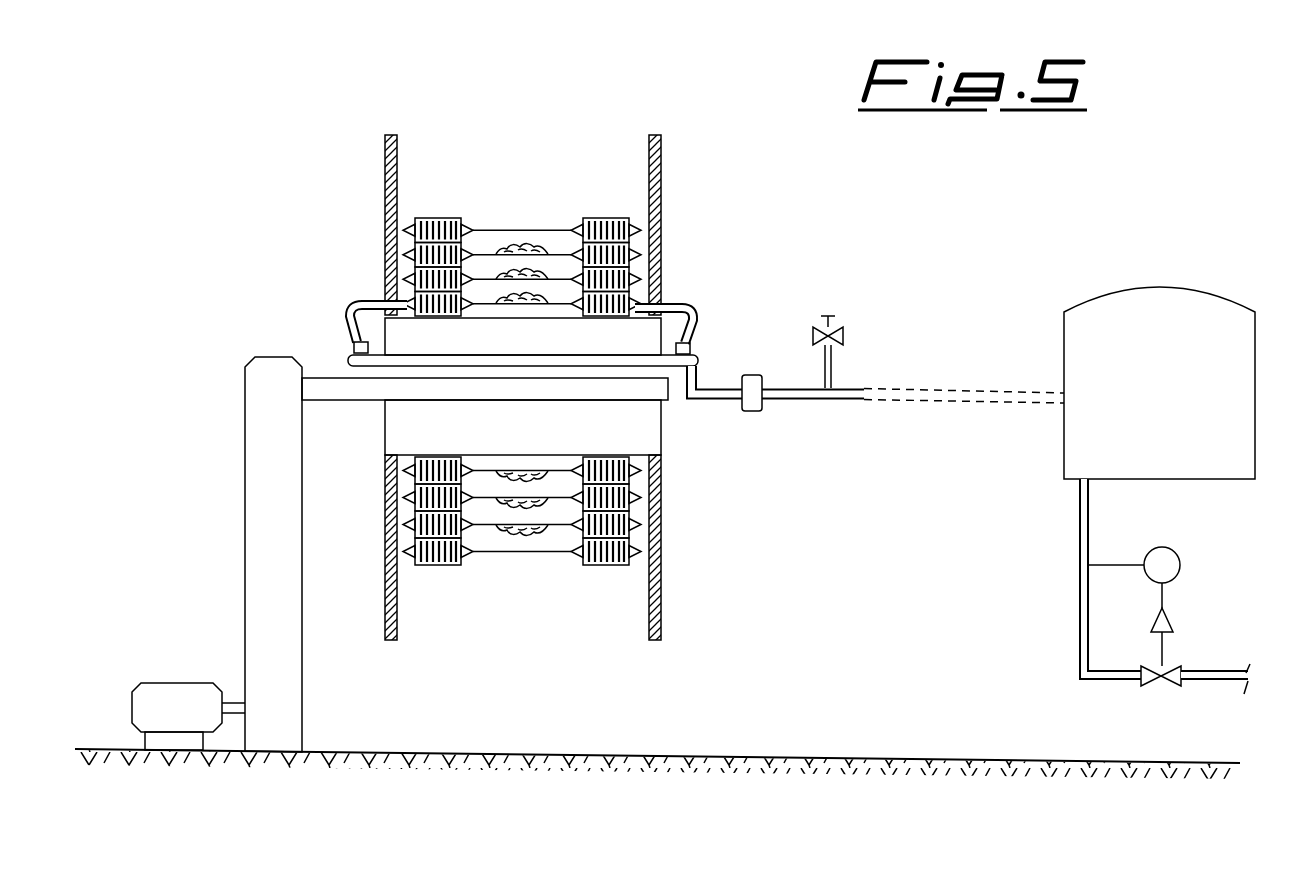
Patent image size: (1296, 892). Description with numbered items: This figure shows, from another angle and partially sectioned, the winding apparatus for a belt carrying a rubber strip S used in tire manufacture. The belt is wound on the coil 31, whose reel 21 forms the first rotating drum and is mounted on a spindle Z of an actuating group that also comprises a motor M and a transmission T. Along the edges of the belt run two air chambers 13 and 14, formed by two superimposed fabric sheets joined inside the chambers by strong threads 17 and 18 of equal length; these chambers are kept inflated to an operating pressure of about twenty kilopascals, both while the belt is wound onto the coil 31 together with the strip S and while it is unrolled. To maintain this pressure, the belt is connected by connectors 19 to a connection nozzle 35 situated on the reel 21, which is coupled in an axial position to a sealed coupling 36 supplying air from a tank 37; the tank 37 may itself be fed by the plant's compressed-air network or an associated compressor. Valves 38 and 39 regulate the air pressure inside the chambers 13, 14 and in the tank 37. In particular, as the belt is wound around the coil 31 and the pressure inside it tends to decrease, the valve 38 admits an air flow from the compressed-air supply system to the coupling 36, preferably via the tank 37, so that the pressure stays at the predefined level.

The coil 31 is at (362, 170).
The air chamber 14 is at (442, 218).
The air chamber 13 is at (617, 218).
The rubber strip S is at (525, 249).
The connectors 19 is at (338, 311).
The reel 21 is at (548, 443).
The spindle Z is at (327, 377).
The transmission T is at (253, 613).
The motor M is at (165, 723).
The threads 18 is at (405, 498).
The threads 17 is at (641, 498).
The connection nozzle 35 is at (710, 390).
The coupling 36 is at (757, 405).
The valve 39 is at (845, 330).
The tank 37 is at (1177, 413).
The valve 38 is at (1152, 689).